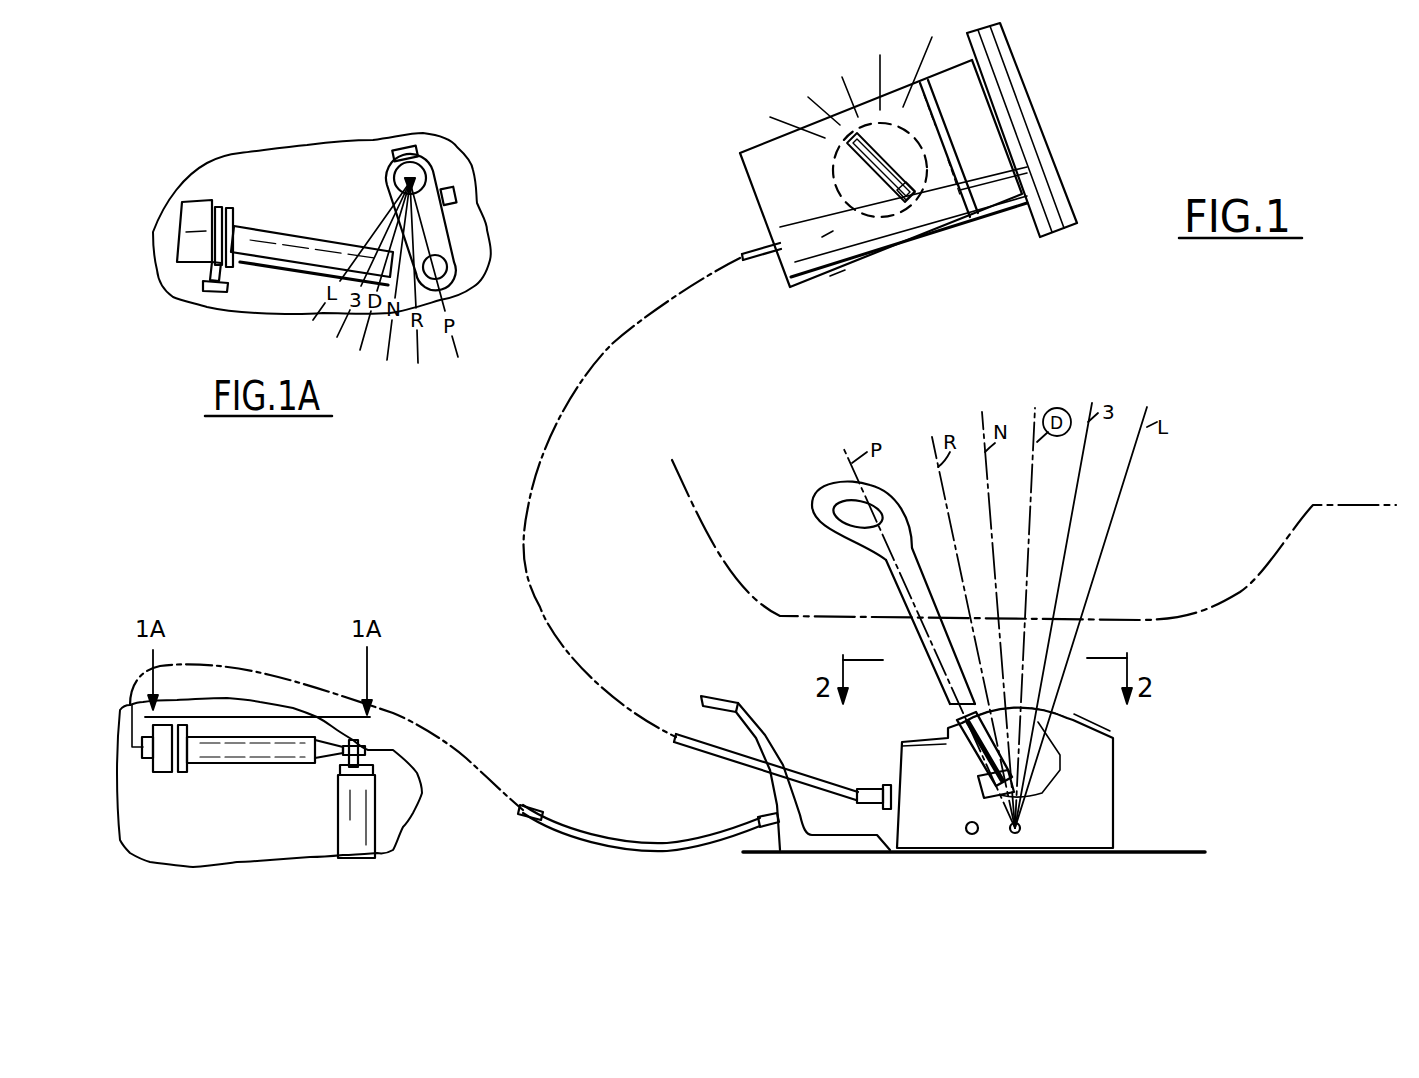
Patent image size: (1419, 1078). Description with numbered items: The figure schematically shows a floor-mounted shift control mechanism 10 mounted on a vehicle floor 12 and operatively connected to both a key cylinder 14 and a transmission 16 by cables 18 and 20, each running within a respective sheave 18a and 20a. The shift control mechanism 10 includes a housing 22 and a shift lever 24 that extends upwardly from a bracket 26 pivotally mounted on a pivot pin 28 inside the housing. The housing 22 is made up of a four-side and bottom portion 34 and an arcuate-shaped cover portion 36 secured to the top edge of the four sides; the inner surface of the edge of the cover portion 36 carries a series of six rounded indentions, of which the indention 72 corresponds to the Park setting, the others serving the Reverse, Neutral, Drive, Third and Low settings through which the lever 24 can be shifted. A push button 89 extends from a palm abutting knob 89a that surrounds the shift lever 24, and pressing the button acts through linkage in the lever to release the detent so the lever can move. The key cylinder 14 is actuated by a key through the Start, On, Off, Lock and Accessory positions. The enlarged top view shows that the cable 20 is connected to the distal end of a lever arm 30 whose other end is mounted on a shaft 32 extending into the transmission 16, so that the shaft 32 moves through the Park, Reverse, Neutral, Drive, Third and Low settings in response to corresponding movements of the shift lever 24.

In FIG. 1, the shift control mechanism 10 is at (789, 698).
In FIG. 1, the vehicle floor 12 is at (1138, 847).
In FIG. 1, the key cylinder 14 is at (752, 190).
In FIG. 1, the transmission 16 is at (223, 652).
In FIG. 1, the cable 18 is at (527, 493).
In FIG. 1, the sheave 18a is at (826, 787).
In FIG. 1A, the cable 20 is at (125, 228).
In FIG. 1, the cable 20 is at (436, 733).
In FIG. 1, the sheave 20a is at (633, 836).
In FIG. 1, the housing 22 is at (1125, 757).
In FIG. 1, the shift lever 24 is at (913, 648).
In FIG. 1, the bracket 26 is at (972, 778).
In FIG. 1, the pivot pin 28 is at (1023, 831).
In FIG. 1A, the lever arm 30 is at (457, 219).
In FIG. 1A, the shaft 32 is at (428, 167).
In FIG. 1, the four-side and bottom portion 34 is at (1116, 788).
In FIG. 1, the arcuate-shaped cover portion 36 is at (1065, 717).
In FIG. 1, the rounded indention 72 is at (952, 723).
In FIG. 1, the push button 89 is at (837, 507).
In FIG. 1, the palm abutting knob 89a is at (842, 540).